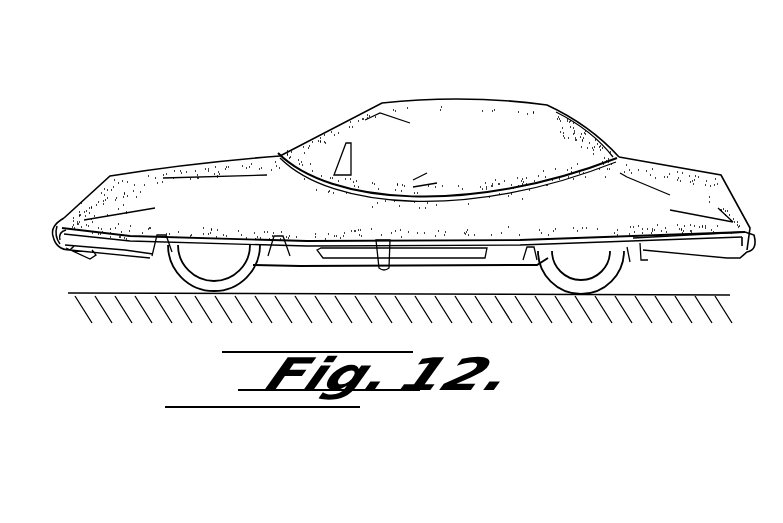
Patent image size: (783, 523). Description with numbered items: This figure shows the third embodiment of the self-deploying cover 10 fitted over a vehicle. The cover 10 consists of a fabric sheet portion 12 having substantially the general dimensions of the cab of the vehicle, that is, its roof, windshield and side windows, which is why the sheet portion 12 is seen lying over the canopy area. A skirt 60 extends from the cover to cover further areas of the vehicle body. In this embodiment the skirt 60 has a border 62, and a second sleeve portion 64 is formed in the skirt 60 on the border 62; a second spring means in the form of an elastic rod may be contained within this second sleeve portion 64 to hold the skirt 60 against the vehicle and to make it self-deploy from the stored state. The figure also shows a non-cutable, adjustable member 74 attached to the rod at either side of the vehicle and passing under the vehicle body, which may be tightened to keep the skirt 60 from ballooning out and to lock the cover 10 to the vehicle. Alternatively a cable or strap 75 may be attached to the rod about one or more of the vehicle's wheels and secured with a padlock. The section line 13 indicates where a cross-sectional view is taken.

The self-deploying cover 10 is at (403, 207).
The fabric sheet portion 12 is at (478, 110).
The section line 13- 13 is at (525, 222).
The skirt 60 is at (684, 169).
The border 62 is at (689, 261).
The second sleeve portion 64 is at (643, 260).
The non-cutable, adjustable member 74 is at (393, 256).
The cable or strap 75 is at (166, 257).